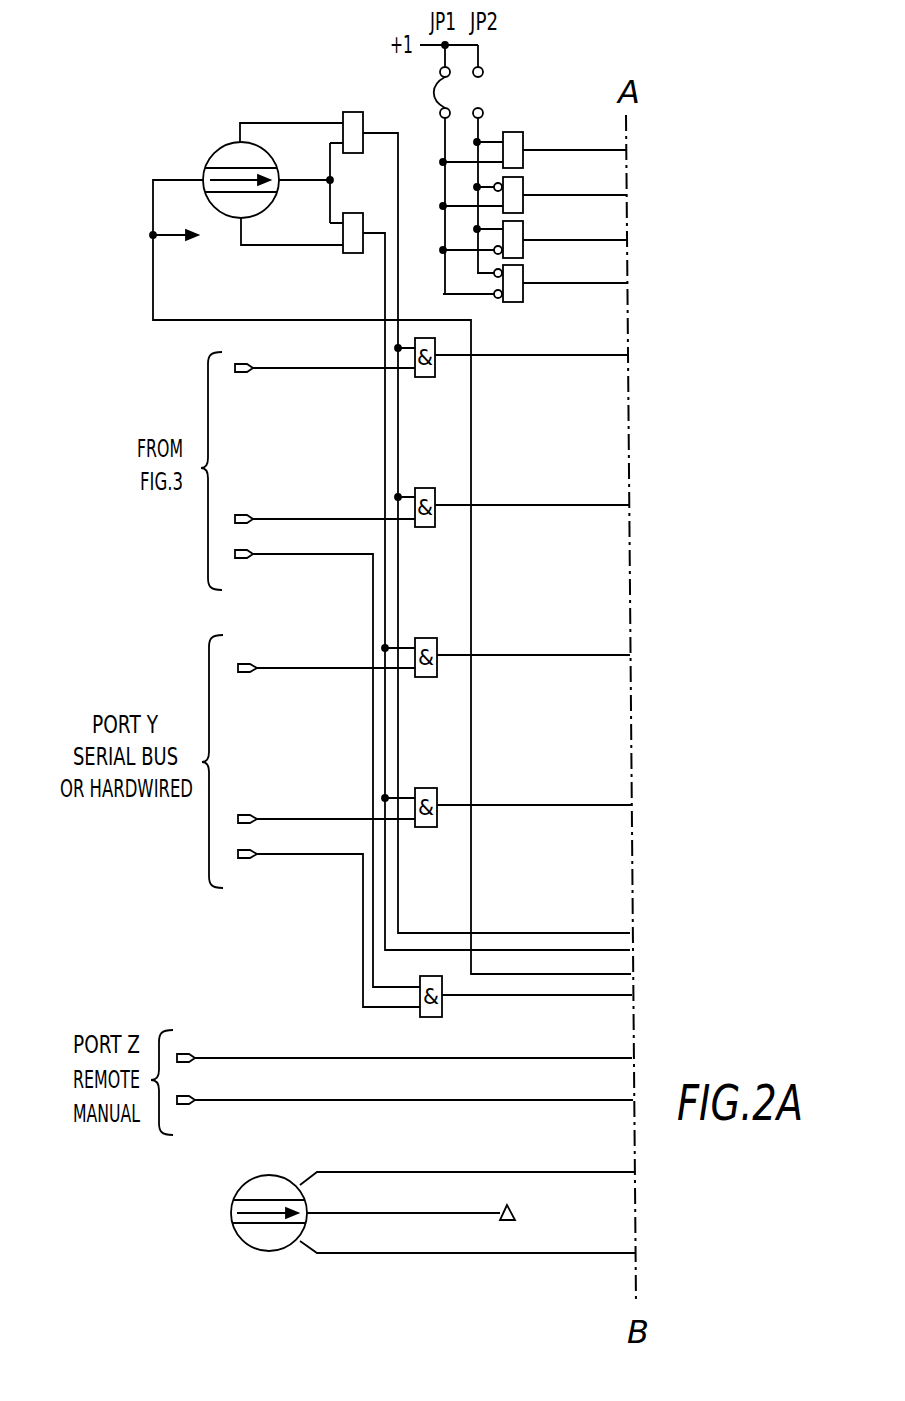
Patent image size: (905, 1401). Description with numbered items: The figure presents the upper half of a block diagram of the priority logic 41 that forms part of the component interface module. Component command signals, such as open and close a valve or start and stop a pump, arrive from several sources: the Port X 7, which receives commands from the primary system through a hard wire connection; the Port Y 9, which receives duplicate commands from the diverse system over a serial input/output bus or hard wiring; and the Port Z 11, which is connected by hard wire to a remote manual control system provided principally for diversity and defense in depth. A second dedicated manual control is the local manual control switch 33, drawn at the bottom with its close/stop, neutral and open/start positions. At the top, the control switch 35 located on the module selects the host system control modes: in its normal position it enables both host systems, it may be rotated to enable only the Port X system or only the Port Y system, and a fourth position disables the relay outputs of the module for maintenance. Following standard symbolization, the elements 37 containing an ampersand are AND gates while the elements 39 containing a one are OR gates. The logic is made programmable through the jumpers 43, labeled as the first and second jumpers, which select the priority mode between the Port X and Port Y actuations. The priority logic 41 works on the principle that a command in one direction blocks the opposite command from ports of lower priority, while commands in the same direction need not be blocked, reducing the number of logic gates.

The control switch 35 is at (226, 142).
The OR gates 39 is at (363, 146).
The priority logic 41 is at (79, 386).
The jumpers 43 is at (432, 91).
The AND gates 37 is at (517, 131).
The Port X 7 is at (200, 540).
The Port Y 9 is at (208, 842).
The Port Z 11 is at (157, 1127).
The switch 33 is at (242, 1187).